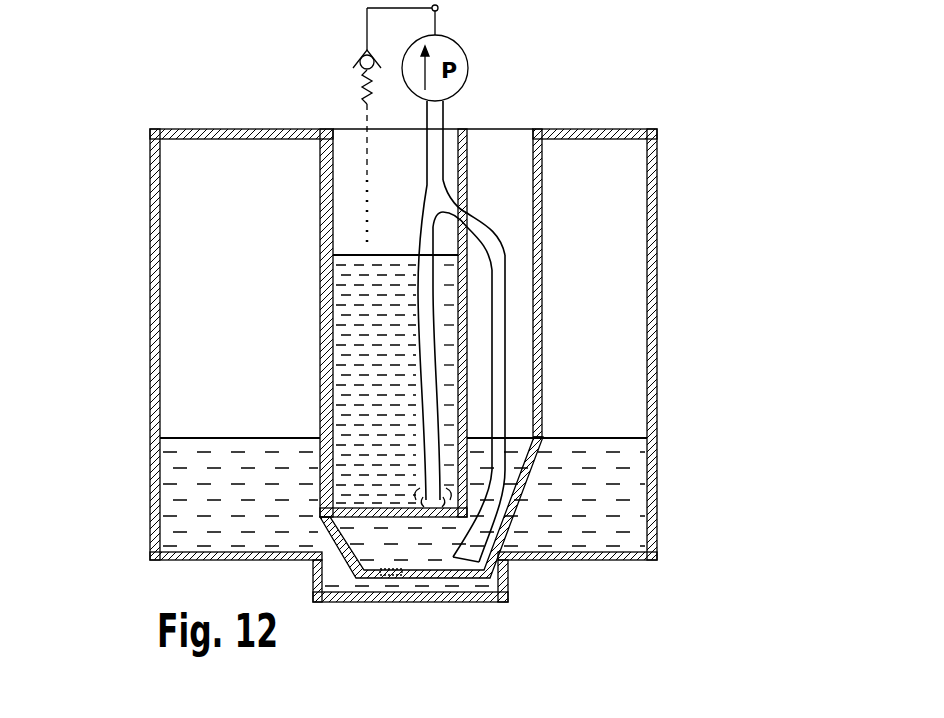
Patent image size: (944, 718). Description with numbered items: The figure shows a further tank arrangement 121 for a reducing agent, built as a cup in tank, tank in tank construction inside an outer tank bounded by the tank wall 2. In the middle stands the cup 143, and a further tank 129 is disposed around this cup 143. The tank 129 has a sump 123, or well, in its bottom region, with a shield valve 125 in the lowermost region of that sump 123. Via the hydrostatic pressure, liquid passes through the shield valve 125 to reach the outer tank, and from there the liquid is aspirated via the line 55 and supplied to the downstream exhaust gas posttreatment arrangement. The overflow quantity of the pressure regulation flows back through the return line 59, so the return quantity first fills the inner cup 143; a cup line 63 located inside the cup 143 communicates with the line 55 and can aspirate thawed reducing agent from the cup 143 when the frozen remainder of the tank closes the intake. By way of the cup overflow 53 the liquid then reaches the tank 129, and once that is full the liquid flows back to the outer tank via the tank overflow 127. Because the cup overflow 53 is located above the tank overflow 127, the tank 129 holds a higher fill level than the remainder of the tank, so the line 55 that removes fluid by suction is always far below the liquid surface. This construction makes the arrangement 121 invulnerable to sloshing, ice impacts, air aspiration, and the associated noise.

The tank arrangement 121 is at (116, 136).
The tank wall 2 is at (647, 162).
The return line 59 is at (365, 103).
The cup overflow 53 is at (463, 253).
The tank overflow 127 is at (538, 283).
The line 55 is at (497, 372).
The cup line 63 is at (435, 430).
The tank 129 is at (527, 464).
The cup 143 is at (320, 318).
The shield valve 125 is at (393, 602).
The sump 123 is at (480, 602).